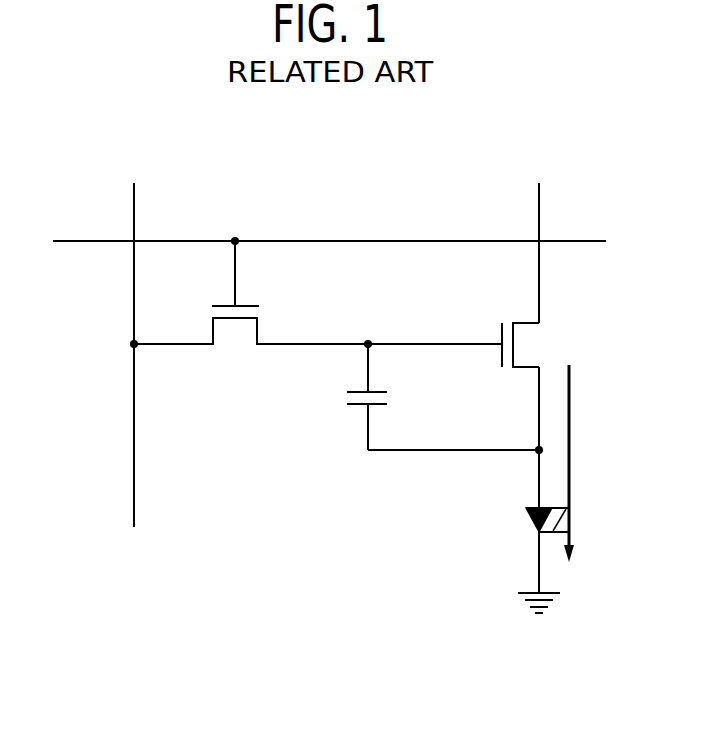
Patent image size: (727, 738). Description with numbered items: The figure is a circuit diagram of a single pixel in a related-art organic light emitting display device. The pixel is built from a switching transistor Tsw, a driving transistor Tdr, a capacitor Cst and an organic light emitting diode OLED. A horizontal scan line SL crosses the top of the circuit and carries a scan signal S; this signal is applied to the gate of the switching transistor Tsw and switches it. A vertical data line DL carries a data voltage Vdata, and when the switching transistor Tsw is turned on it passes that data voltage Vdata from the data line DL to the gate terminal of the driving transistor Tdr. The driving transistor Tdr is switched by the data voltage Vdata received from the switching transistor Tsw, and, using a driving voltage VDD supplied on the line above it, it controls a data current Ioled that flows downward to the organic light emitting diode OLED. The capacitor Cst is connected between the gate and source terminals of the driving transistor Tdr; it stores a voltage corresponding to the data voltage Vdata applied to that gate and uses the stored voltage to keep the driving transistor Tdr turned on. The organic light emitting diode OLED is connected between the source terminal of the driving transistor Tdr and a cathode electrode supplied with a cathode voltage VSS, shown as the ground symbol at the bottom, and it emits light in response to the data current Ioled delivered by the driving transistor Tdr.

The data line DL is at (134, 448).
The data voltage Vdata is at (134, 198).
The scan line SL is at (584, 240).
The scan signal S is at (85, 242).
The driving voltage VDD is at (538, 239).
The switching transistor Tsw is at (249, 304).
The driving transistor Tdr is at (472, 386).
The capacitor Cst is at (445, 399).
The organic light emitting diode OLED is at (510, 521).
The data current Ioled is at (596, 463).
The cathode voltage VSS is at (541, 617).